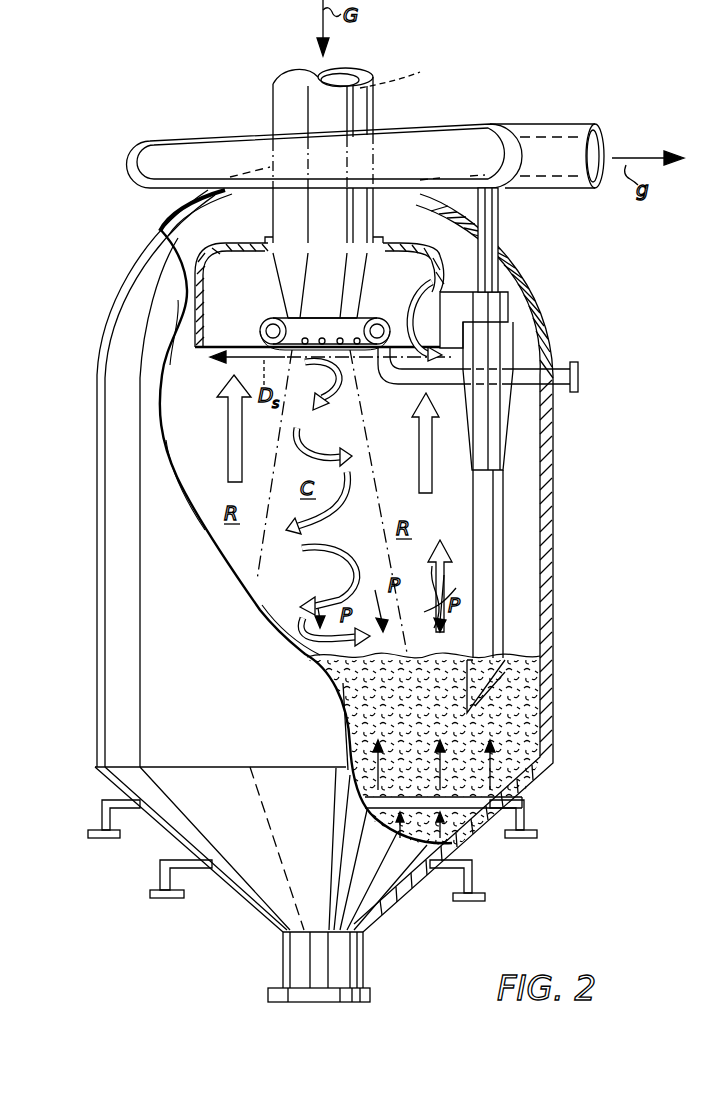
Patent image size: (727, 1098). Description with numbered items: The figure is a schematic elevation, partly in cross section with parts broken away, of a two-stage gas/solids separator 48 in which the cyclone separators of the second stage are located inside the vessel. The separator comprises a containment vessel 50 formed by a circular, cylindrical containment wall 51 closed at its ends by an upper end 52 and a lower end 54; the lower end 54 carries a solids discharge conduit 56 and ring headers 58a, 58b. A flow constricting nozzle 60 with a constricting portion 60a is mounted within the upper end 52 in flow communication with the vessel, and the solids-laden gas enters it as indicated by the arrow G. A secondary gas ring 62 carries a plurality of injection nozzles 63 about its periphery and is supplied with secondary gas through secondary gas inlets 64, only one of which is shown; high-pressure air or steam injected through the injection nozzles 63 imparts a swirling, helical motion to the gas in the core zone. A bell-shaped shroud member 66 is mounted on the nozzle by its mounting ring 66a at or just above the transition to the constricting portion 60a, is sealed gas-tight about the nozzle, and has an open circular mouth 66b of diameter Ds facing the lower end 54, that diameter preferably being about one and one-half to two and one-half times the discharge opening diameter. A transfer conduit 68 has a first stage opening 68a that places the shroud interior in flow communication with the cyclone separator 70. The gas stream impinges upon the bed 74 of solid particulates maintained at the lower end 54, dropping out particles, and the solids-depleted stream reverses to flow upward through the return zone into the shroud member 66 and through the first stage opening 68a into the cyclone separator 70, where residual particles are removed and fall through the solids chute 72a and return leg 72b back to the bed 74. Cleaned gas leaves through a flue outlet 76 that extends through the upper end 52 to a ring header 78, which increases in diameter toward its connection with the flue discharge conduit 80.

The gas/solids separator 48 is at (90, 543).
The containment vessel 50 is at (150, 628).
The containment wall 51 is at (548, 532).
The upper end 52 is at (128, 278).
The lower end 54 is at (264, 876).
The solids discharge conduit 56 is at (350, 968).
The ring header 58a is at (100, 806).
The ring header 58b is at (162, 874).
The flow constricting nozzle 60 is at (352, 118).
The constricting portion 60a is at (300, 286).
The secondary gas ring 62 is at (276, 318).
The injection nozzles 63 is at (330, 337).
The secondary gas inlet 64 is at (456, 386).
The shroud member 66 is at (260, 244).
The mounting ring 66a is at (383, 238).
The mouth 66b is at (240, 352).
The transfer conduit 68 is at (462, 298).
The first stage opening 68a is at (438, 296).
The cyclone separator 70 is at (500, 416).
The solids chute 72a is at (492, 458).
The return leg 72b is at (508, 588).
The bed 74 is at (424, 720).
The flue outlet 76 is at (494, 236).
The ring header 78 is at (452, 138).
The flue discharge conduit 80 is at (548, 132).